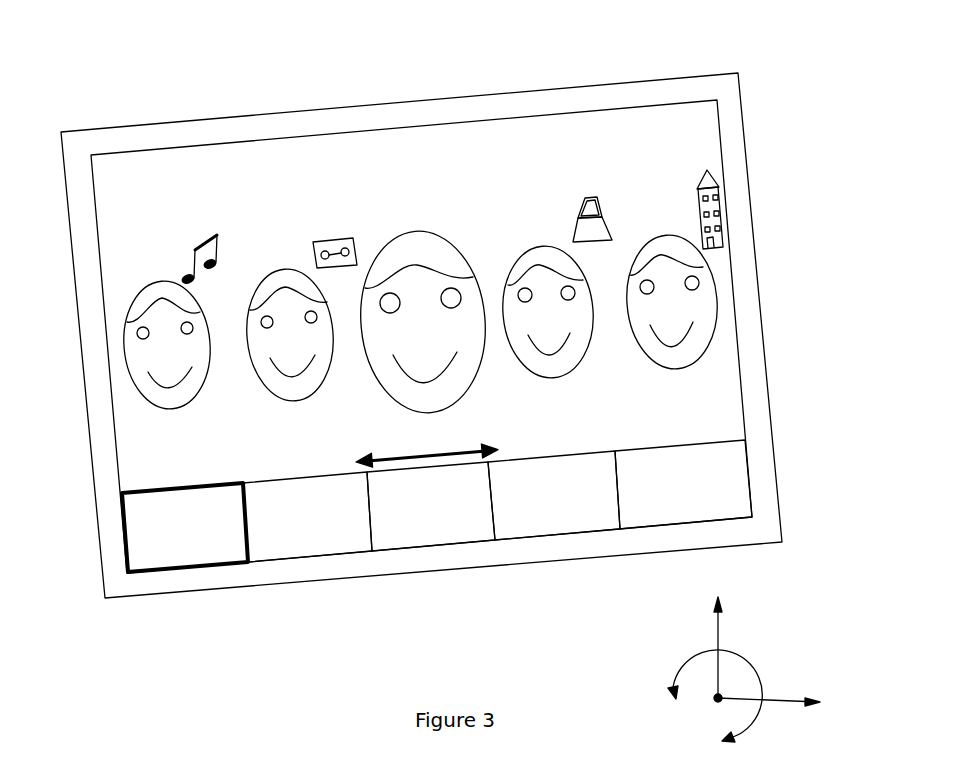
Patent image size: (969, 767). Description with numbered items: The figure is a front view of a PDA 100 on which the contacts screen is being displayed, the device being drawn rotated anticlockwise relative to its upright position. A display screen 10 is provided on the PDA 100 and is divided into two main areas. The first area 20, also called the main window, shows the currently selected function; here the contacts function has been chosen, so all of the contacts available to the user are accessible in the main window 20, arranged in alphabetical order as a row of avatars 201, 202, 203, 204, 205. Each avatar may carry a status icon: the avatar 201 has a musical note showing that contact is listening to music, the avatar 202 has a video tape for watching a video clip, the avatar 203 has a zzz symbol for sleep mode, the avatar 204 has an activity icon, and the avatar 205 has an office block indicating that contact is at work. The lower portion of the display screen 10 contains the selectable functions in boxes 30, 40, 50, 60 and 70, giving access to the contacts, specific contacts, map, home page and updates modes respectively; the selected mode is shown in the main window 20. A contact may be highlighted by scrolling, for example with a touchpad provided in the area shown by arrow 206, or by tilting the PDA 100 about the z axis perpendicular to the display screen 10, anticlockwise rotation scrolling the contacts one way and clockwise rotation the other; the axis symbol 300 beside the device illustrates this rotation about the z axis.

The PDA 100 is at (368, 100).
The display screen 10 is at (533, 117).
The first area 20 is at (125, 178).
The contacts box 30 is at (168, 555).
The specific contacts box 40 is at (312, 543).
The map box 50 is at (435, 533).
The home page box 60 is at (563, 522).
The updates box 70 is at (697, 508).
The avatar 201 is at (160, 288).
The avatar 202 is at (287, 278).
The avatar 203 is at (428, 257).
The avatar 204 is at (547, 255).
The avatar 205 is at (665, 247).
The arrow 206 is at (487, 445).
The coordinate axes 300 is at (745, 660).